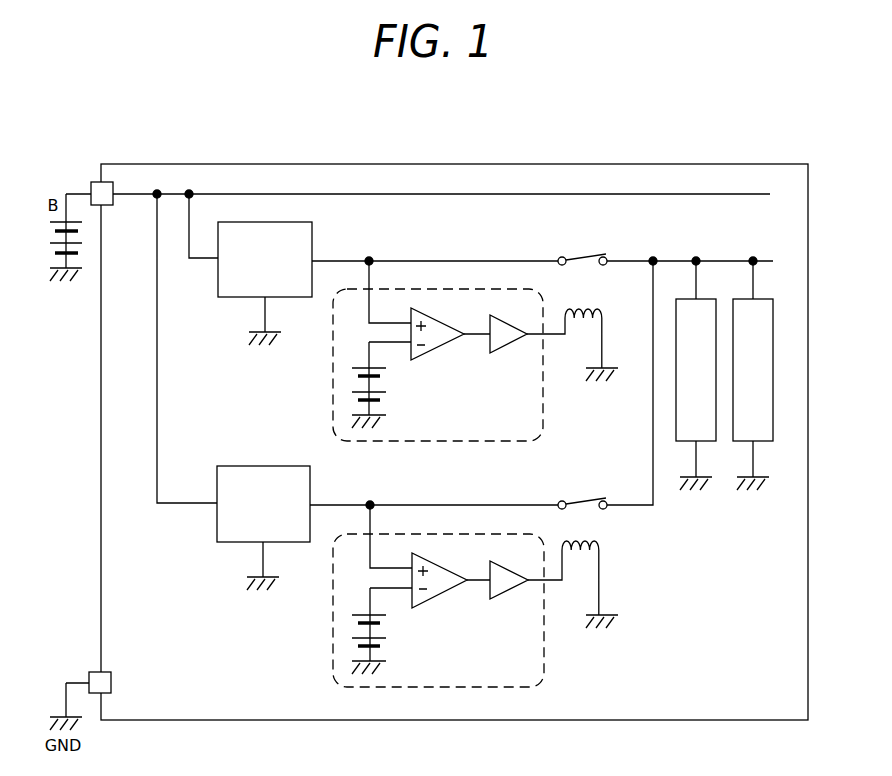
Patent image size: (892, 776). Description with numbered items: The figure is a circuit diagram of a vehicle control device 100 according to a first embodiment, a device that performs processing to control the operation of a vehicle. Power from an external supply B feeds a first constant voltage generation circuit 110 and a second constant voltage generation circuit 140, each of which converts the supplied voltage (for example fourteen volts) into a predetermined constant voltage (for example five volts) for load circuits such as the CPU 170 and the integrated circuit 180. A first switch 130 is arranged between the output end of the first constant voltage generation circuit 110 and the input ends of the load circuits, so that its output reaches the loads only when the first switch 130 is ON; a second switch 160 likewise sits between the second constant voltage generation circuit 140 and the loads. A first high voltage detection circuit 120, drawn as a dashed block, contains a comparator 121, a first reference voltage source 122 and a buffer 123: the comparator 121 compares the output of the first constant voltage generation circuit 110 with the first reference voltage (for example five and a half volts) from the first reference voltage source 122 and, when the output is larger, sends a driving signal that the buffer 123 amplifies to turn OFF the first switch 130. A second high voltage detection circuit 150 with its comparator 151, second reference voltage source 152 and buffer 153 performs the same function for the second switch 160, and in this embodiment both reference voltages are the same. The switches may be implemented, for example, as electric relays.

The vehicle control device 100 is at (457, 164).
The first constant voltage generation circuit 110 is at (235, 297).
The first high voltage detection circuit 120 is at (396, 351).
The comparator 121 is at (437, 350).
The first reference voltage source 122 is at (401, 395).
The buffer 123 is at (507, 347).
The first switch 130 is at (564, 239).
The second constant voltage generation circuit 140 is at (232, 542).
The second high voltage detection circuit 150 is at (398, 596).
The comparator 151 is at (437, 595).
The second reference voltage source 152 is at (399, 640).
The buffer 153 is at (507, 592).
The second switch 160 is at (564, 484).
The CPU 170 is at (705, 299).
The integrated circuit (IC) 180 is at (762, 299).